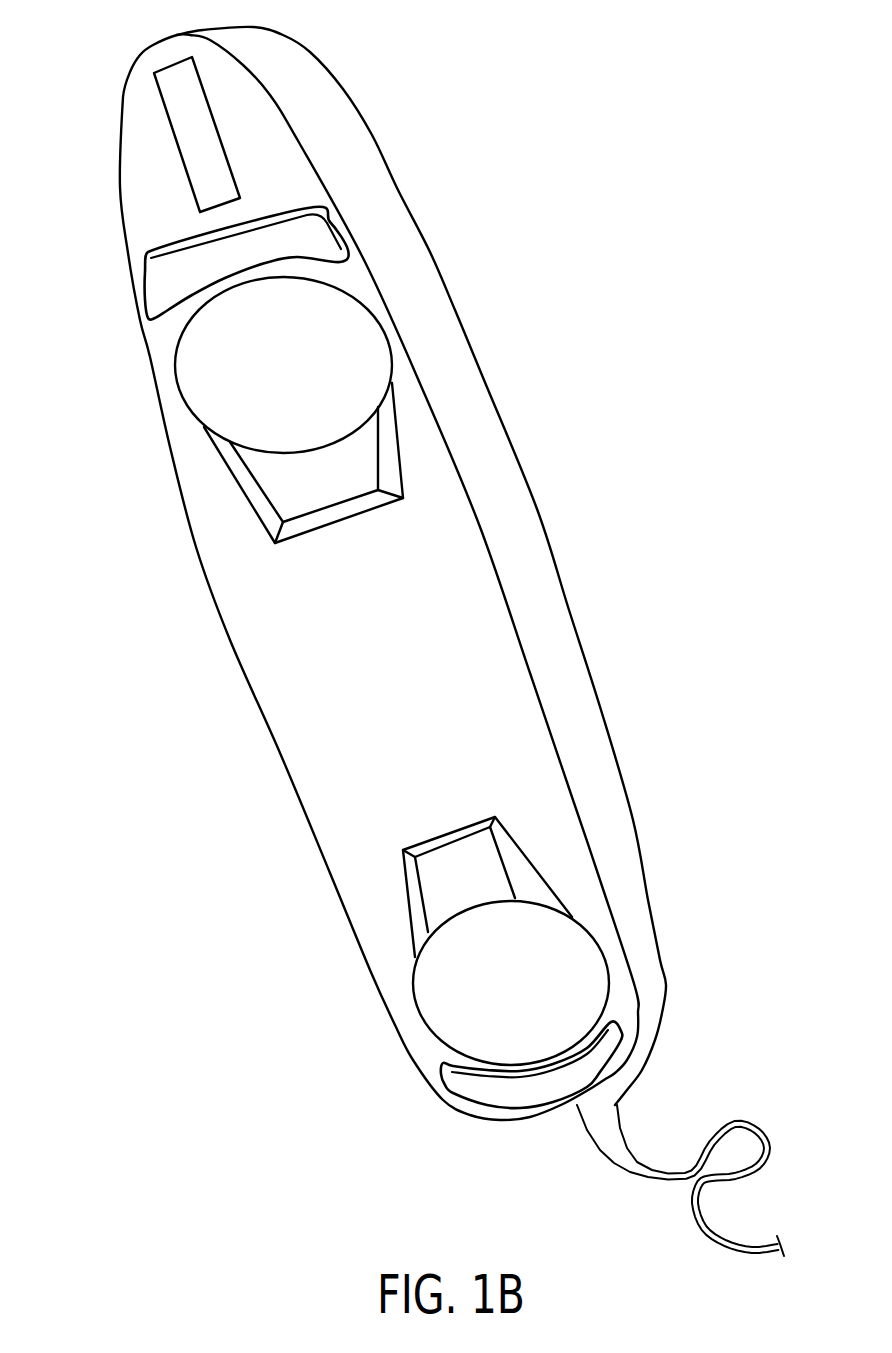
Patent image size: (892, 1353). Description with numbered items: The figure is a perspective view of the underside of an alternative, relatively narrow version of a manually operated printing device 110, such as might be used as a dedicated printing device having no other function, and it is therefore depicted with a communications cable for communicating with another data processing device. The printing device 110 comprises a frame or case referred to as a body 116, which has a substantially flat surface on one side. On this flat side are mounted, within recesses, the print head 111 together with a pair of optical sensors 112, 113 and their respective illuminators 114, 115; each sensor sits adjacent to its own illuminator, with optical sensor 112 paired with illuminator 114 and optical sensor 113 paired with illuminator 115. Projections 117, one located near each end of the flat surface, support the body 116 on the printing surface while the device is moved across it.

The manually operated printing device 110 is at (524, 114).
The print head 111 is at (170, 122).
The optical sensor 112 is at (300, 377).
The optical sensor 113 is at (521, 994).
The illuminator 114 is at (343, 513).
The illuminator 115 is at (455, 832).
The body 116 is at (640, 845).
The projections 117 is at (157, 284).